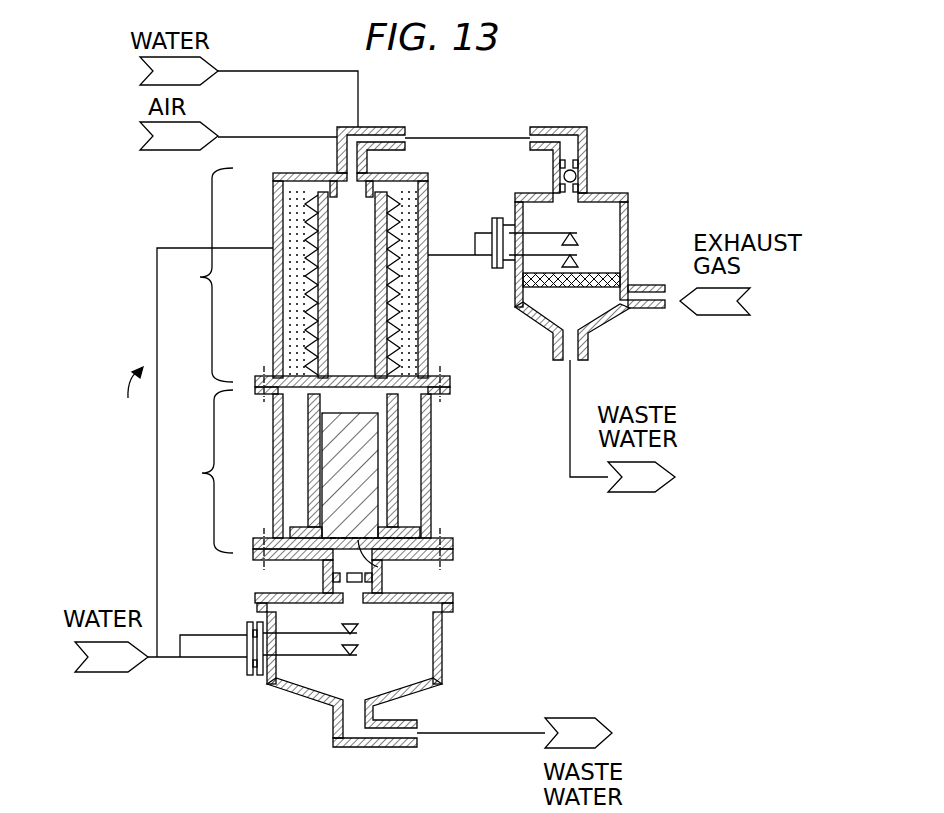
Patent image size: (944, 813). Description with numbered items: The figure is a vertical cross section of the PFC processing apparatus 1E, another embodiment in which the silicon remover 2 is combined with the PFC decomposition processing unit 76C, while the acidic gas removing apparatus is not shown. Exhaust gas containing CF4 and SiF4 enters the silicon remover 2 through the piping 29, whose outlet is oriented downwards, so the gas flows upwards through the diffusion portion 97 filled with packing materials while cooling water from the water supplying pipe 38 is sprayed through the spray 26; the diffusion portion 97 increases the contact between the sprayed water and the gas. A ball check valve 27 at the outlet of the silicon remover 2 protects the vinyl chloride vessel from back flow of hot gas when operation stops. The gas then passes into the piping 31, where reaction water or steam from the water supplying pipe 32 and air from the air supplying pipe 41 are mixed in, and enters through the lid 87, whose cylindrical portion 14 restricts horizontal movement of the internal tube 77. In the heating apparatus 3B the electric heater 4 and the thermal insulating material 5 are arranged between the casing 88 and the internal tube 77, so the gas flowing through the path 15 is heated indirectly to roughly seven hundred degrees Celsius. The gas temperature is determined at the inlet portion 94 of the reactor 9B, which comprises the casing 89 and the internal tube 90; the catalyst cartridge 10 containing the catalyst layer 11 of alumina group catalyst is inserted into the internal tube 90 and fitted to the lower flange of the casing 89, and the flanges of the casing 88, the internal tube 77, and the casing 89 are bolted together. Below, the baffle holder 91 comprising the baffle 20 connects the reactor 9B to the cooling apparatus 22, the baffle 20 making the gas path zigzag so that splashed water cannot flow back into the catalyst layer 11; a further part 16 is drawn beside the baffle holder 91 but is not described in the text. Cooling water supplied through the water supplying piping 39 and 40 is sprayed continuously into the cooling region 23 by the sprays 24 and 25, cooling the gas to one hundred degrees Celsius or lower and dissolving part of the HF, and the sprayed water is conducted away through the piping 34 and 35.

The water supplying pipe 32 is at (265, 71).
The air supplying pipe 41 is at (246, 137).
The piping 31 is at (381, 127).
The lid 87 is at (276, 177).
The thermal insulating material 5 is at (430, 200).
The cylindrical portion 14 is at (338, 190).
The electric heater 4 is at (375, 237).
The path 15 is at (364, 292).
The casing 88 is at (441, 284).
The internal tube 77 is at (378, 313).
The heating apparatus 3B is at (199, 275).
The reactor 9B is at (199, 471).
The PFC processing apparatus 1E is at (114, 405).
The water supplying pipe 38 is at (157, 556).
The inlet portion 94 is at (380, 407).
The casing 89 is at (272, 432).
The catalyst layer 11 is at (318, 466).
The catalyst cartridge 10 is at (400, 453).
The internal tube 90 is at (400, 491).
The PFC decomposition processing unit 76C is at (442, 531).
The nozzle 16 is at (385, 568).
The baffle holder 91 is at (388, 585).
The baffle 20 is at (348, 567).
The spray 25 is at (359, 627).
The spray 24 is at (362, 647).
The cooling apparatus 22 is at (444, 648).
The cooling region 23 is at (307, 686).
The piping 34 is at (391, 748).
The water supplying piping 40 is at (193, 635).
The water supplying piping 39 is at (199, 658).
The ball check valve 27 is at (588, 178).
The silicon remover 2 is at (629, 232).
The spray 26 is at (579, 240).
The diffusion portion 97 is at (607, 277).
The piping 29 is at (649, 288).
The piping 35 is at (590, 343).